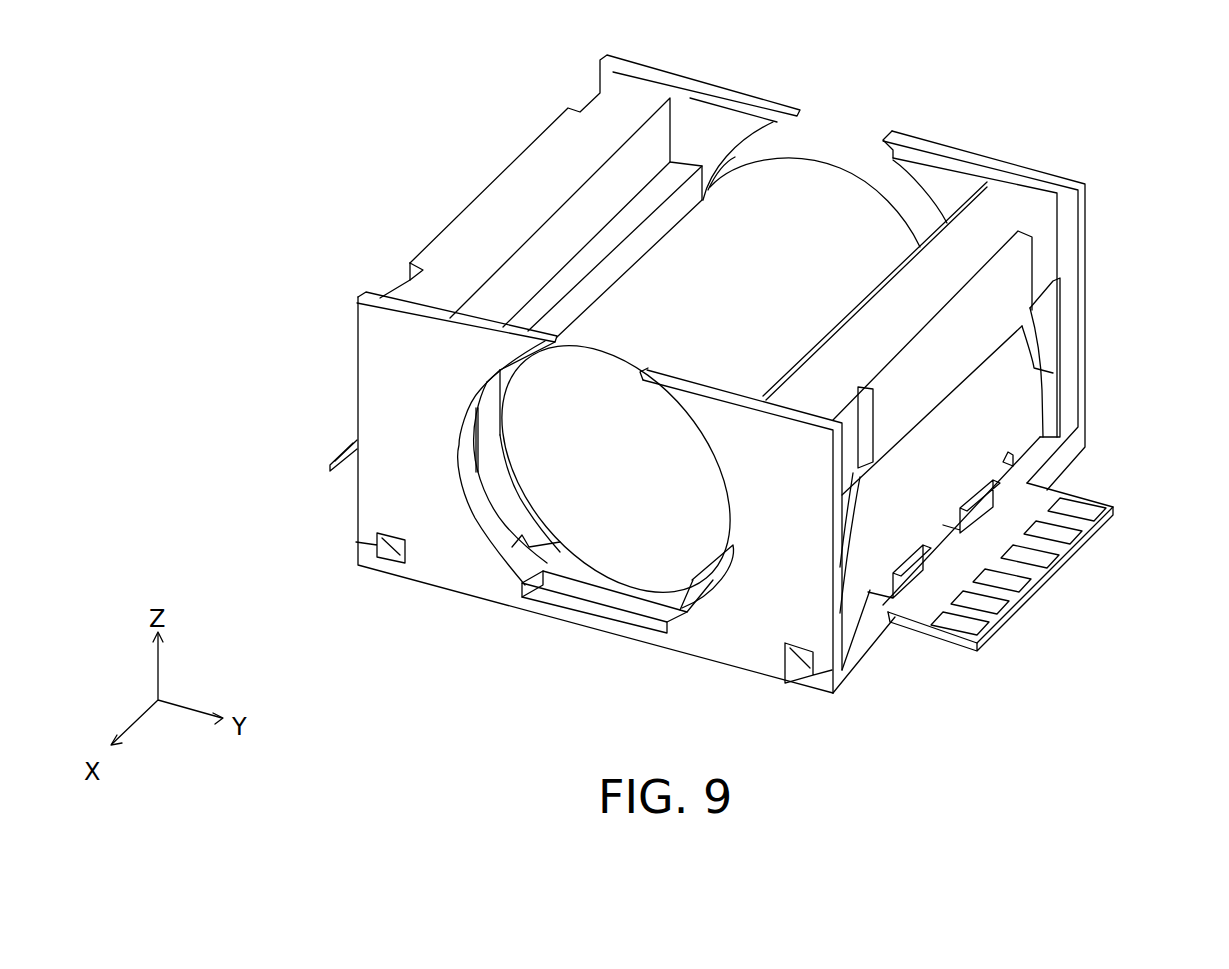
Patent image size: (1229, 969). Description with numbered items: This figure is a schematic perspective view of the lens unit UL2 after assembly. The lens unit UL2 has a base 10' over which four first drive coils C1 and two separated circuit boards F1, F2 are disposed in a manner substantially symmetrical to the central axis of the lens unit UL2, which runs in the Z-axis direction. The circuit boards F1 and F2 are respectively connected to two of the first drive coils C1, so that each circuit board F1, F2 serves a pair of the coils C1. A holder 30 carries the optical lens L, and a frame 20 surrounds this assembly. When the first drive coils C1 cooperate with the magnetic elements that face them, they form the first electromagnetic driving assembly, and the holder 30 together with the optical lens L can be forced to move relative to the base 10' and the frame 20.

The lens unit UL2 is at (186, 78).
The holder 30 is at (1005, 413).
The frame 20 is at (392, 497).
The optical lens L is at (802, 197).
The circuit board F1 is at (1033, 558).
The first drive coil C1 is at (978, 500).
The circuit board F2 is at (350, 458).
The base 10' is at (347, 583).